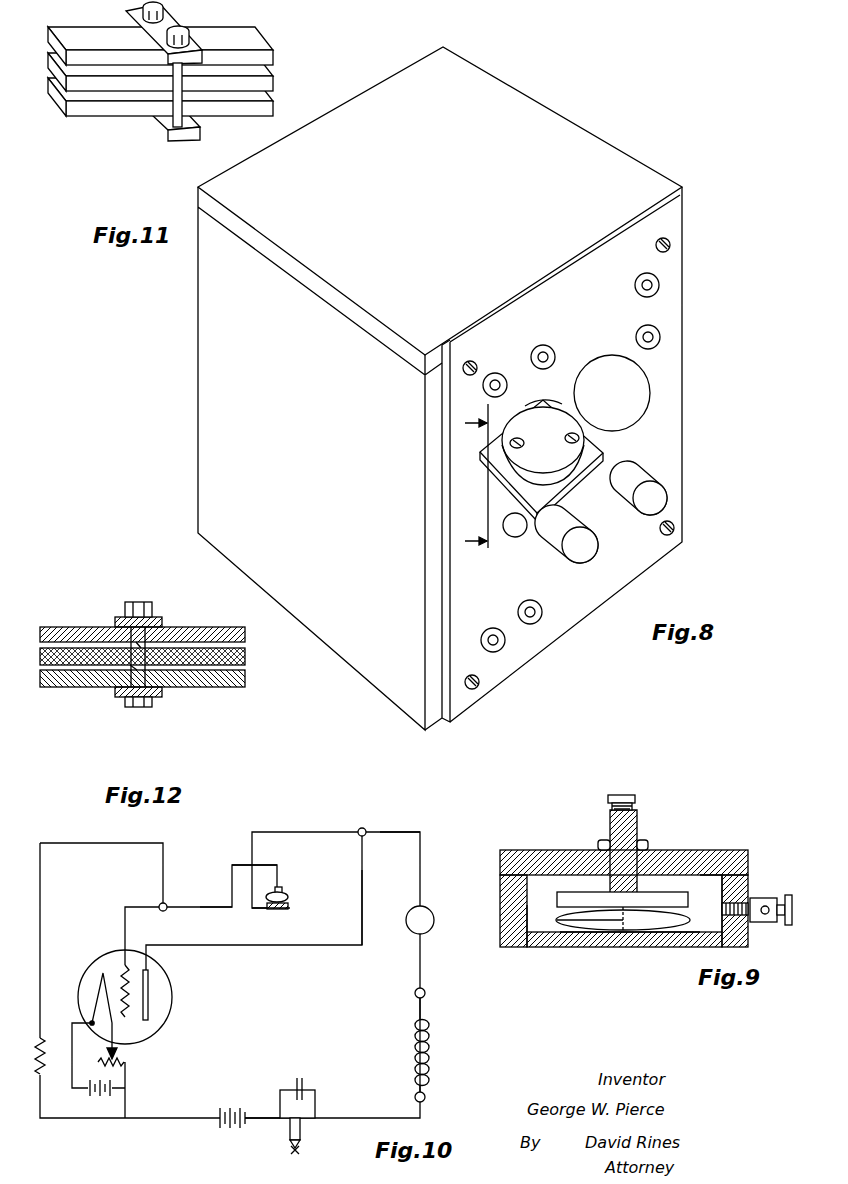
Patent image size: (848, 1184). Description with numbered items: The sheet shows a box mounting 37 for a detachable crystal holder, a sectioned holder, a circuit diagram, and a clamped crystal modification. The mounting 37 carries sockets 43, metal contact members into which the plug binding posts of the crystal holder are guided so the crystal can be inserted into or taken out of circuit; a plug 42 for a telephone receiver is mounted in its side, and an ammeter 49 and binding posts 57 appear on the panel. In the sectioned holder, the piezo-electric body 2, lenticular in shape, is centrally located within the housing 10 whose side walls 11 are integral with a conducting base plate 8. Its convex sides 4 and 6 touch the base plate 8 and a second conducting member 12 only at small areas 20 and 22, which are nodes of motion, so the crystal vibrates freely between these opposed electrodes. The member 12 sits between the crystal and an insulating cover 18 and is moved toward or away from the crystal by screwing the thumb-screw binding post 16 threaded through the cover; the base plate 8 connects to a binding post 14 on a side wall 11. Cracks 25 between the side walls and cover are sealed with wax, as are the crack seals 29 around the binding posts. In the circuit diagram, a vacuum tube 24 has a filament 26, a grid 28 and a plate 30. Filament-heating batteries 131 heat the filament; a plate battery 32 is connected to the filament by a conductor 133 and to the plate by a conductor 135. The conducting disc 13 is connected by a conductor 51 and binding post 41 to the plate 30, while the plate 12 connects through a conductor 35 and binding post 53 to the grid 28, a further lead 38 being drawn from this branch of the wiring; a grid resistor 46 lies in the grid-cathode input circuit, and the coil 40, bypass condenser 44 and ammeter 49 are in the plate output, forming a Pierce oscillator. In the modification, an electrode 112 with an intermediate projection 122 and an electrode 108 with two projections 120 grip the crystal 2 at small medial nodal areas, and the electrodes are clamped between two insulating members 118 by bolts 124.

In FIG. 11, the piezo-electric body 2 is at (266, 81).
In FIG. 12, the piezo-electric body 2 is at (250, 653).
In FIG. 10, the piezo-electric body 2 is at (290, 897).
In FIG. 9, the piezo-electric body 2 is at (623, 920).
In FIG. 9, the side of the crystal 4 is at (585, 922).
In FIG. 8, the side of the crystal 6 is at (470, 478).
In FIG. 9, the side of the crystal 6 is at (530, 915).
In FIG. 10, the base plate 8 is at (293, 905).
In FIG. 9, the base plate 8 is at (672, 940).
In FIG. 8, the housing 10 is at (515, 525).
In FIG. 9, the housing 10 is at (773, 867).
In FIG. 8, the side walls 11 is at (565, 470).
In FIG. 9, the side walls 11 is at (502, 907).
In FIG. 10, the conducting member 12 is at (265, 897).
In FIG. 9, the conducting member 12 is at (712, 875).
In FIG. 10, the disc conductor 13 is at (278, 912).
In FIG. 9, the binding post 14 is at (790, 897).
In FIG. 10, the binding post 16 is at (282, 889).
In FIG. 9, the binding post 16 is at (637, 835).
In FIG. 8, the insulating cover 18 is at (552, 420).
In FIG. 9, the insulating cover 18 is at (548, 862).
In FIG. 9, the contact point 20 is at (623, 932).
In FIG. 9, the contact point 22 is at (683, 895).
In FIG. 10, the vacuum tube 24 is at (93, 958).
In FIG. 9, the cracks 25 is at (500, 875).
In FIG. 10, the filament 26 is at (96, 1000).
In FIG. 10, the grid 28 is at (130, 960).
In FIG. 9, the seal 29 is at (598, 848).
In FIG. 10, the plate 30 is at (148, 990).
In FIG. 10, the plate battery 32 is at (232, 1105).
In FIG. 10, the conductor 35 is at (213, 905).
In FIG. 8, the box mounting 37 is at (375, 645).
In FIG. 10, the conductor 38 is at (363, 912).
In FIG. 10, the coil 40 is at (416, 1030).
In FIG. 10, the binding post 41 is at (365, 829).
In FIG. 8, the plug 42 is at (506, 640).
In FIG. 10, the plug 42 is at (301, 1128).
In FIG. 8, the sockets 43 is at (503, 378).
In FIG. 10, the bypass condenser 44 is at (302, 1083).
In FIG. 10, the grid resistor 46 is at (45, 1037).
In FIG. 8, the ammeter 49 is at (643, 392).
In FIG. 10, the ammeter 49 is at (434, 912).
In FIG. 10, the conductor 51 is at (125, 907).
In FIG. 10, the binding post 53 is at (159, 905).
In FIG. 8, the binding posts 57 is at (655, 334).
In FIG. 10, the binding posts 57 is at (425, 995).
In FIG. 11, the electrode 108 is at (212, 106).
In FIG. 12, the electrode 108 is at (205, 688).
In FIG. 11, the electrode 112 is at (245, 37).
In FIG. 12, the electrode 112 is at (205, 630).
In FIG. 11, the insulating members 118 is at (185, 136).
In FIG. 12, the insulating members 118 is at (160, 617).
In FIG. 11, the projections 120 is at (170, 95).
In FIG. 12, the projections 120 is at (125, 684).
In FIG. 11, the projection 122 is at (160, 68).
In FIG. 12, the projection 122 is at (112, 626).
In FIG. 11, the bolts 124 is at (182, 31).
In FIG. 12, the bolts 124 is at (130, 602).
In FIG. 10, the filament-heating batteries 131 is at (92, 1097).
In FIG. 10, the conductor 133 is at (165, 1117).
In FIG. 10, the conductor 135 is at (400, 832).